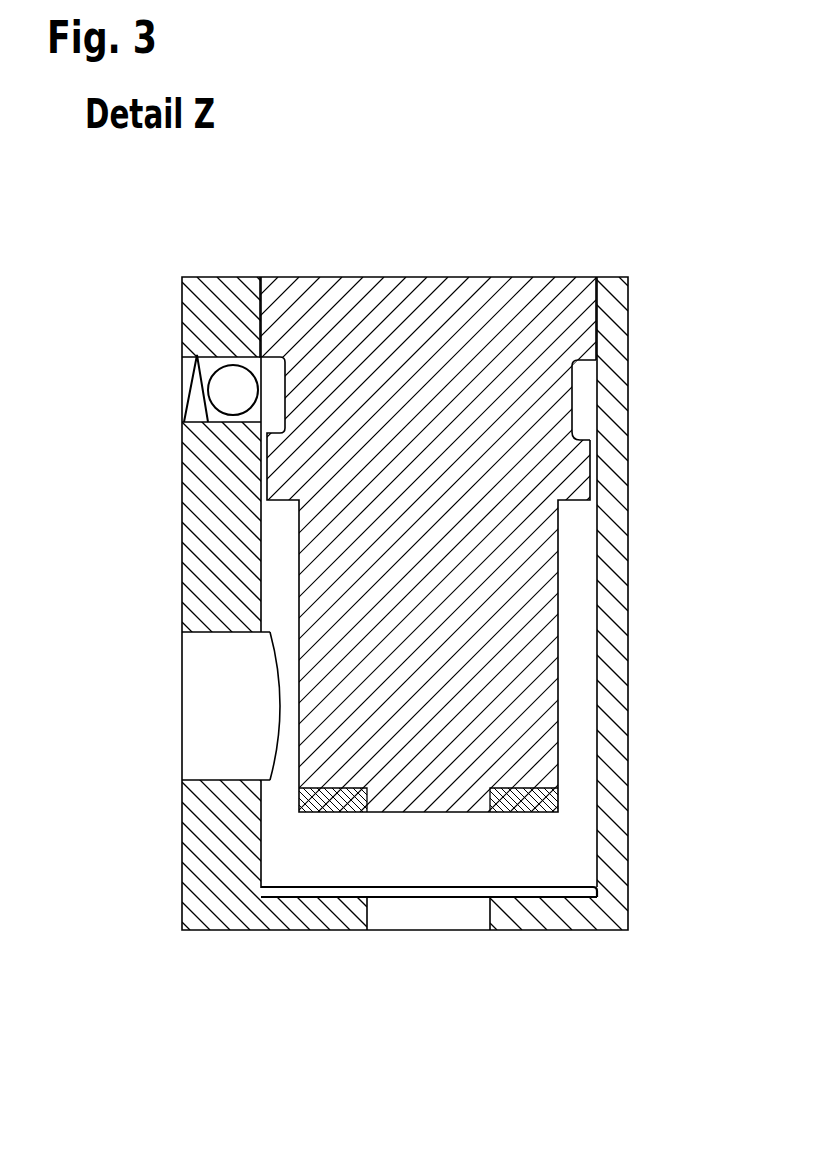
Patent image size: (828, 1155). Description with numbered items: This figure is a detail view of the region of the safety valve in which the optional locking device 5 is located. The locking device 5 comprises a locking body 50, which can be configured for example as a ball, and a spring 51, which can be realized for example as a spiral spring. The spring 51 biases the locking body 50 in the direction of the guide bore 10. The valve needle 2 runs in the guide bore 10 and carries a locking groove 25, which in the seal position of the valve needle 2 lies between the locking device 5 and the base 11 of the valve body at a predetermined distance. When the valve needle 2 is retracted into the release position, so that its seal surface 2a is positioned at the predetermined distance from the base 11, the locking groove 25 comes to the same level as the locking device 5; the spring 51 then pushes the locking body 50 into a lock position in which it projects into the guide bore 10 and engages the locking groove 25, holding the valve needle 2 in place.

The valve needle 2 is at (530, 590).
The seal surface 2a is at (515, 825).
The locking device 5 is at (148, 365).
The guide bore 10 is at (277, 527).
The base 11 is at (318, 897).
The locking groove 25 is at (572, 402).
The locking body 50 is at (236, 380).
The spring 51 is at (187, 411).